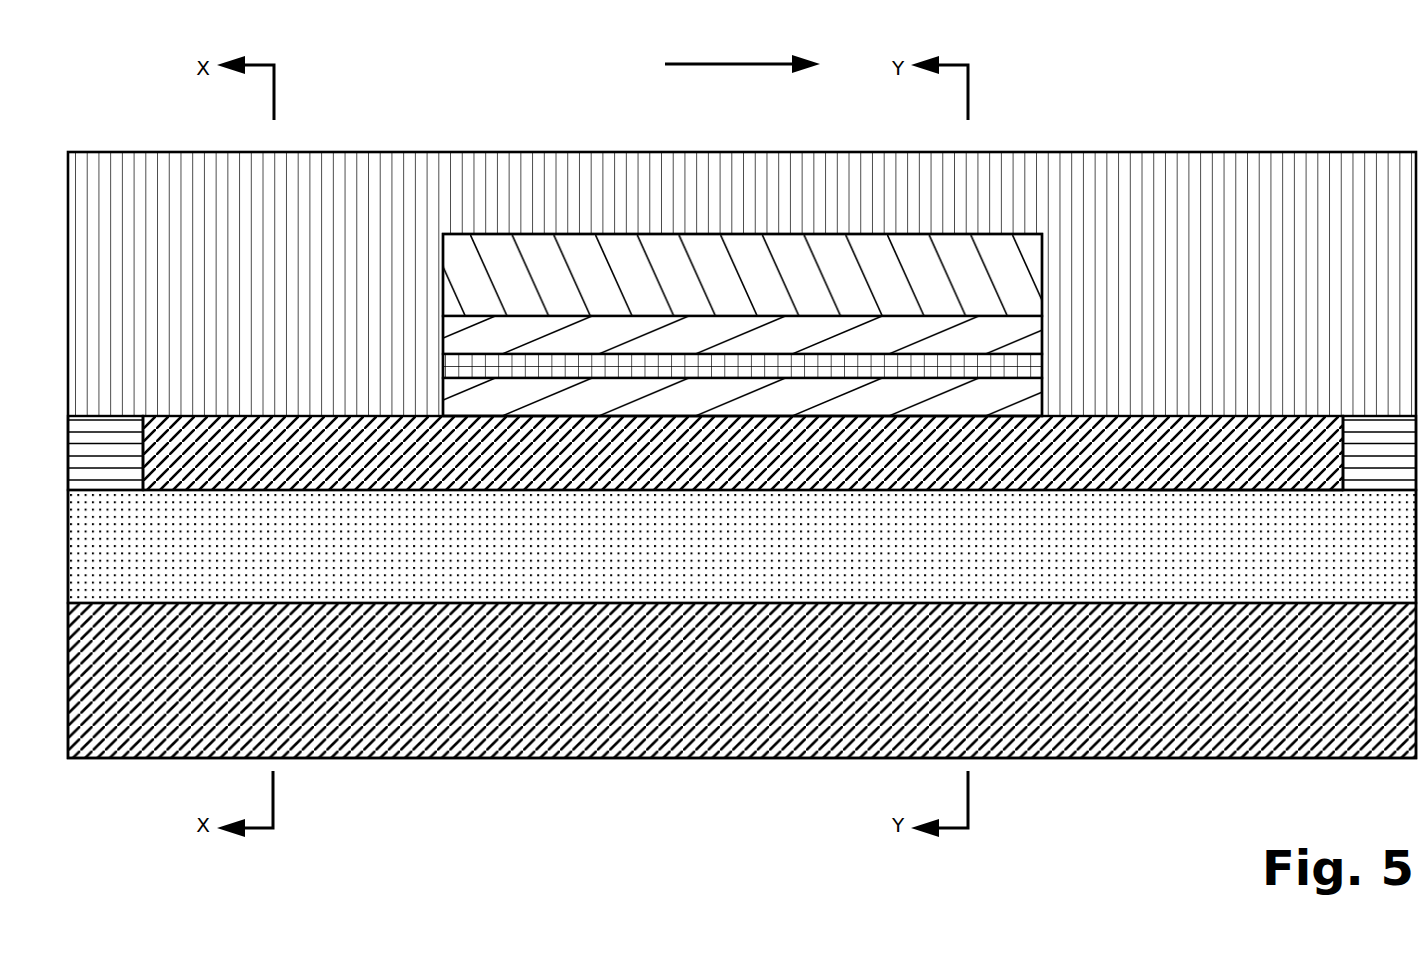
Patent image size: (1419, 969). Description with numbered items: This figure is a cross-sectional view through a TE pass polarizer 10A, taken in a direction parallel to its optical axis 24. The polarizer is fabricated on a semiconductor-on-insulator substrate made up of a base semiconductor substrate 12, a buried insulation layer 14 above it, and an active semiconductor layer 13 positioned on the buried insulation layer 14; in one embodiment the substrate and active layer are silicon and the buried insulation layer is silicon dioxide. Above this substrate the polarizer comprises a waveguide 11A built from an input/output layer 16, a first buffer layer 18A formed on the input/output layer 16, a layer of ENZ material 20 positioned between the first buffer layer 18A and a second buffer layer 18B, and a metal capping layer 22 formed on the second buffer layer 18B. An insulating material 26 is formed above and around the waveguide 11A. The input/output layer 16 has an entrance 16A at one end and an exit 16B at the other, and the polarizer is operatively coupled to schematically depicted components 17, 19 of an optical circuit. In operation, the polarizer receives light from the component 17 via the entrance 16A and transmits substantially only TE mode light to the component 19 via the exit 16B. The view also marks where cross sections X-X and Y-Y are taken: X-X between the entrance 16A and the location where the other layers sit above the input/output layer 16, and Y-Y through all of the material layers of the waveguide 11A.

The TE pass polarizer 10A is at (1265, 82).
The waveguide 11A is at (1086, 224).
The base semiconductor substrate 12 is at (1356, 649).
The active semiconductor layer 13 is at (1190, 474).
The buried insulation layer 14 is at (1356, 574).
The input/output layer 16 is at (738, 465).
The entrance 16A is at (145, 448).
The exit 16B is at (1340, 448).
The component 17 is at (89, 465).
The first buffer layer 18A is at (732, 405).
The second buffer layer 18B is at (732, 343).
The component 19 is at (1366, 465).
The layer of ENZ material 20 is at (738, 375).
The metal capping layer 22 is at (738, 285).
The optical axis 24 is at (725, 62).
The insulating material 26 is at (247, 216).